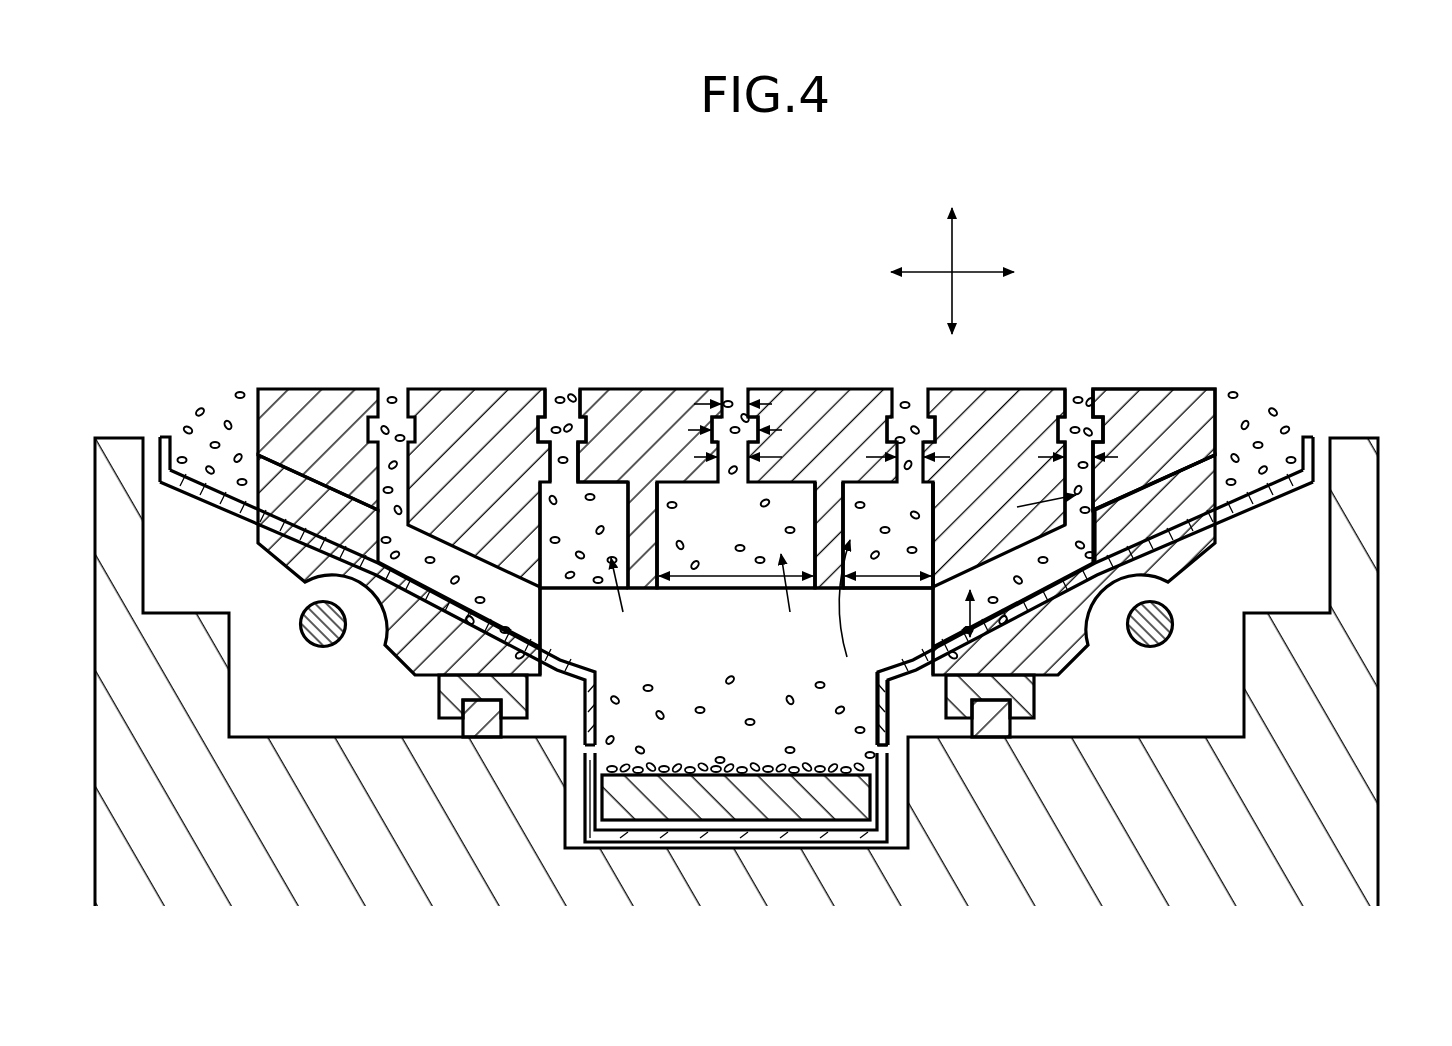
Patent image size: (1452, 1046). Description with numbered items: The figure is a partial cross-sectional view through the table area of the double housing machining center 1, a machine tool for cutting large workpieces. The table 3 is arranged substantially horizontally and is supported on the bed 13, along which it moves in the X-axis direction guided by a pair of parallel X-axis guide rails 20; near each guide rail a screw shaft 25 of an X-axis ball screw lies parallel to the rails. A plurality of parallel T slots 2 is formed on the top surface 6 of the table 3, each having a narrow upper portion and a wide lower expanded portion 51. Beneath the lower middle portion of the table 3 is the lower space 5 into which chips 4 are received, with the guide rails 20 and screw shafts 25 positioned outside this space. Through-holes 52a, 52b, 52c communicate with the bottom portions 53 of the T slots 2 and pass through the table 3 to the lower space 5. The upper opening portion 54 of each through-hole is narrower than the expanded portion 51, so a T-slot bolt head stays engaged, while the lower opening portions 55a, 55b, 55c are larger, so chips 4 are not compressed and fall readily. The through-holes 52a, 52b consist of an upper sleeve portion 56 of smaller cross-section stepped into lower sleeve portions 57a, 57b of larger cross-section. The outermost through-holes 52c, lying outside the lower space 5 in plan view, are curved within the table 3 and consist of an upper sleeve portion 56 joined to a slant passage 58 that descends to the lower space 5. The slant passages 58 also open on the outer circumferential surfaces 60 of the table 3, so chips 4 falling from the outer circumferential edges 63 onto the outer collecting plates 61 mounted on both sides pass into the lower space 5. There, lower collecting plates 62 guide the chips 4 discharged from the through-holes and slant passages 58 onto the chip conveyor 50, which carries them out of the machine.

The double housing machining center 1 is at (1097, 258).
The T slot 2 is at (738, 389).
The table 3 is at (1145, 383).
The chips 4 is at (566, 440).
The lower space 5 is at (736, 715).
The top surface 6 is at (1013, 388).
The bed 13 is at (1380, 604).
The X-axis guide rail 20 is at (463, 720).
The screw shaft 25 is at (298, 633).
The chip conveyor 50 is at (803, 775).
The expanded portion 51 is at (710, 427).
The through-hole 52a is at (810, 597).
The through-hole 52b is at (736, 608).
The through-hole 52c is at (1018, 511).
The bottom portion 53 is at (588, 432).
The upper opening portion 54 is at (562, 440).
The lower opening portion 55a is at (750, 590).
The lower opening portion 55b is at (585, 580).
The lower opening 55c is at (888, 695).
The upper sleeve portion 56 is at (740, 480).
The lower sleeve portion 57a is at (736, 535).
The lower sleeve portion 57b is at (888, 535).
The slant passage 58 is at (270, 500).
The outer circumferential surface 60 is at (258, 420).
The outer collecting plate 61 is at (160, 437).
The lower collecting plate 62 is at (600, 690).
The outer circumferential edge 63 is at (1218, 389).